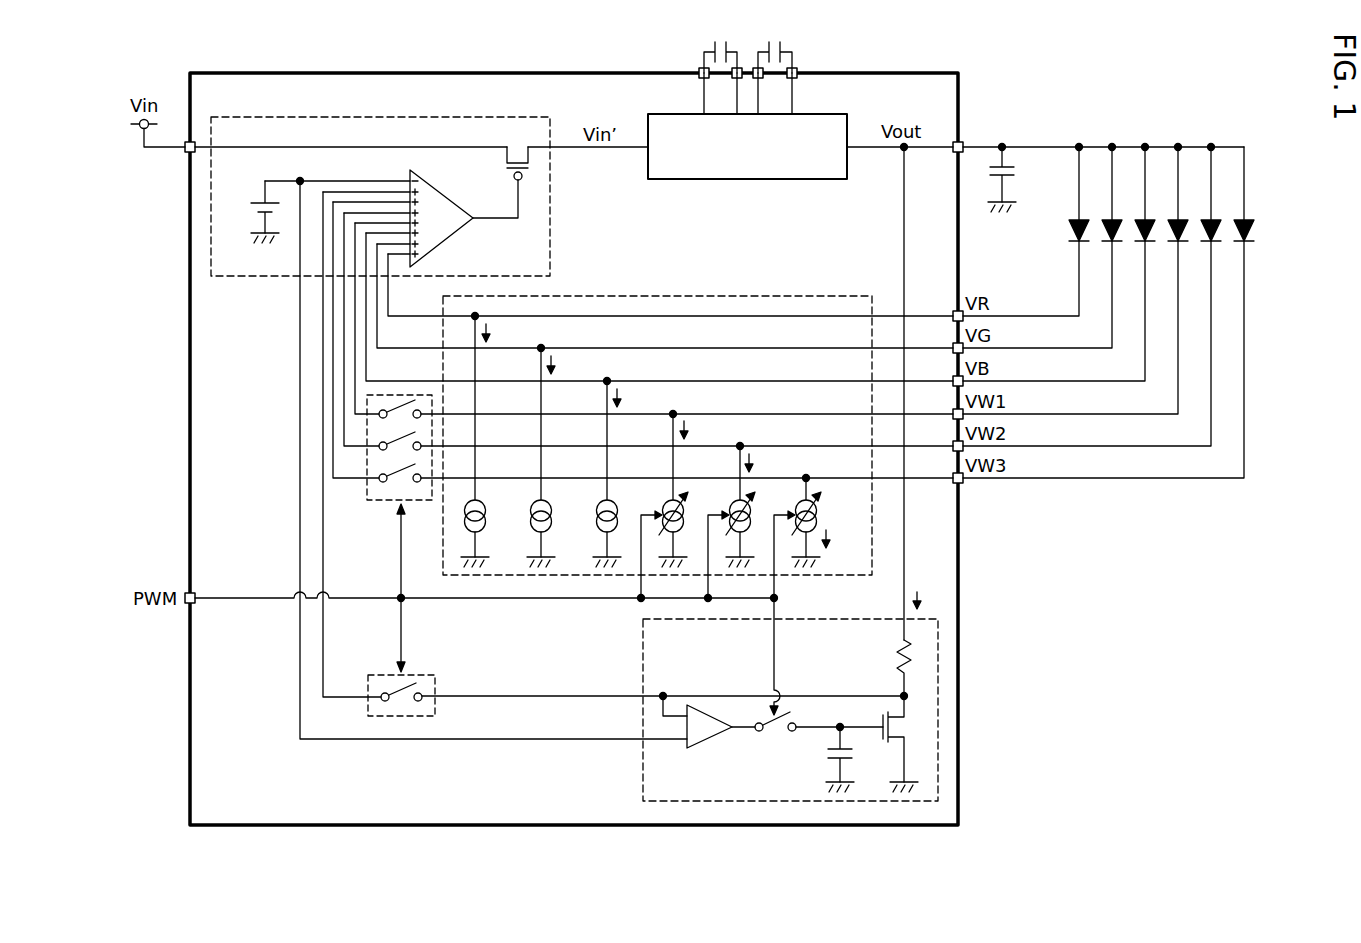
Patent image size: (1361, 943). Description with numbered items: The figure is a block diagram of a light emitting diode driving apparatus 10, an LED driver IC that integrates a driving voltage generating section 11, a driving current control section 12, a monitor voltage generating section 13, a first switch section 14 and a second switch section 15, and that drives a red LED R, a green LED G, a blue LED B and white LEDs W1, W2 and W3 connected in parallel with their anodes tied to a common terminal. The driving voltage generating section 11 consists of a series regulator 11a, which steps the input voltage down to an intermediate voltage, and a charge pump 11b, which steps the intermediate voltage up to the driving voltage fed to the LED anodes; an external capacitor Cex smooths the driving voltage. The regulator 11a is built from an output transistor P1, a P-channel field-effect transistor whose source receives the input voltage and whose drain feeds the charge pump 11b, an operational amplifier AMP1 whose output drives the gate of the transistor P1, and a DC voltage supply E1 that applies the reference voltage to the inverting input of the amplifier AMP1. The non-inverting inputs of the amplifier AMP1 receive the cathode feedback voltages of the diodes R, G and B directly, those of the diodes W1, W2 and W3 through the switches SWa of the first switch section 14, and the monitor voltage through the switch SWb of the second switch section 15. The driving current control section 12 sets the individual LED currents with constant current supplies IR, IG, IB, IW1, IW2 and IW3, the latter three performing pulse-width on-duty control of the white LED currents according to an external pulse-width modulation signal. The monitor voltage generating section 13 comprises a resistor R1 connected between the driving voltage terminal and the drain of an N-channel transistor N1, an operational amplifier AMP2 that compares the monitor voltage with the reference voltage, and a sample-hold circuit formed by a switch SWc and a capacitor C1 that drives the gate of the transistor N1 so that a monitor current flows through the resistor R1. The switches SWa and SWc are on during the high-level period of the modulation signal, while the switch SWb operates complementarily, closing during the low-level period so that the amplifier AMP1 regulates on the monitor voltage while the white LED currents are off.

The light emitting diode driving apparatus 10 is at (566, 73).
The driving voltage generating section 11 is at (620, 234).
The series regulator 11a is at (379, 117).
The charge pump 11b is at (822, 114).
The driving current control section 12 is at (748, 296).
The monitor voltage generating section 13 is at (834, 619).
The first switch section 14 is at (417, 500).
The second switch section 15 is at (418, 675).
The DC voltage supply E1 is at (258, 211).
The operational amplifier AMP1 is at (463, 192).
The output transistor P1 is at (518, 152).
The constant current supply IR is at (484, 506).
The constant current supply IG is at (550, 506).
The constant current supply IB is at (616, 506).
The constant current supply IW1 is at (688, 506).
The constant current supply IW2 is at (754, 506).
The constant current supply IW3 is at (818, 506).
The switches SWa is at (385, 493).
The switch SWb is at (387, 688).
The switch SWc is at (775, 733).
The operational amplifier AMP2 is at (710, 752).
The capacitor C1 is at (855, 758).
The N-channel field-effect transistor N1 is at (906, 728).
The resistor R1 is at (894, 660).
The capacitor Cex is at (1016, 176).
The red light emitting diode R is at (1087, 219).
The green light emitting diode G is at (1120, 219).
The blue light emitting diode B is at (1153, 219).
The white light emitting diode W1 is at (1186, 219).
The white light emitting diode W2 is at (1219, 219).
The white light emitting diode W3 is at (1252, 219).